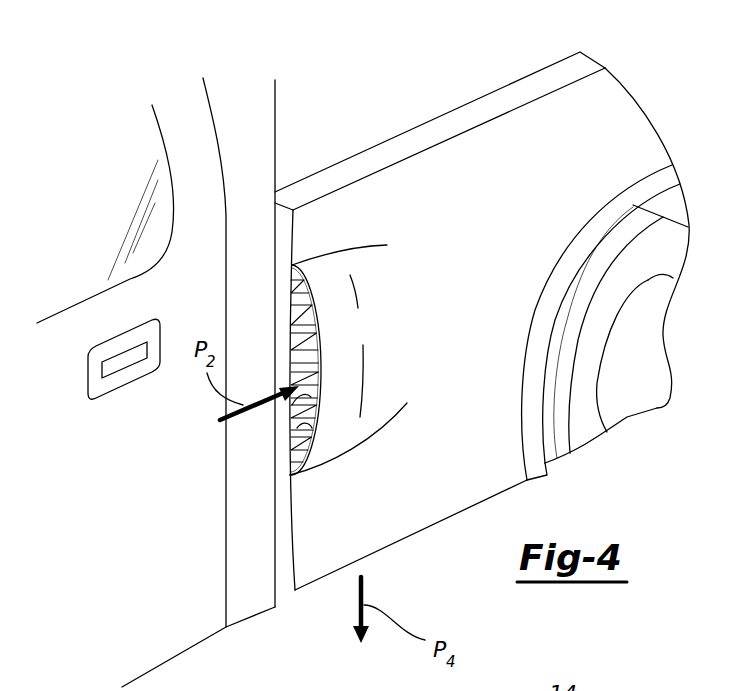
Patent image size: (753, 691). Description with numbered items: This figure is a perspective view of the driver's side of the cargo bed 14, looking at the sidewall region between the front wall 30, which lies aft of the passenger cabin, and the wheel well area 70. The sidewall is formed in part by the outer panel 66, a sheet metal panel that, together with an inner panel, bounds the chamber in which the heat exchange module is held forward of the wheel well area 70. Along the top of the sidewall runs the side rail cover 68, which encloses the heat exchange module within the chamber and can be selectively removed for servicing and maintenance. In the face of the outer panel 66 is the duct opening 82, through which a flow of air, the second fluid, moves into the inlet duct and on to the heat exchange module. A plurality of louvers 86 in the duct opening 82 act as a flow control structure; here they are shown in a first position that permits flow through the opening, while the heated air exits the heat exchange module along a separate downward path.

The cargo bed 14 is at (460, 300).
The front wall 30 is at (288, 568).
The outer panel 66 is at (435, 172).
The side rail cover 68 is at (360, 167).
The wheel well area 70 is at (592, 358).
The duct opening 82 is at (288, 461).
The louvers 86 is at (292, 405).